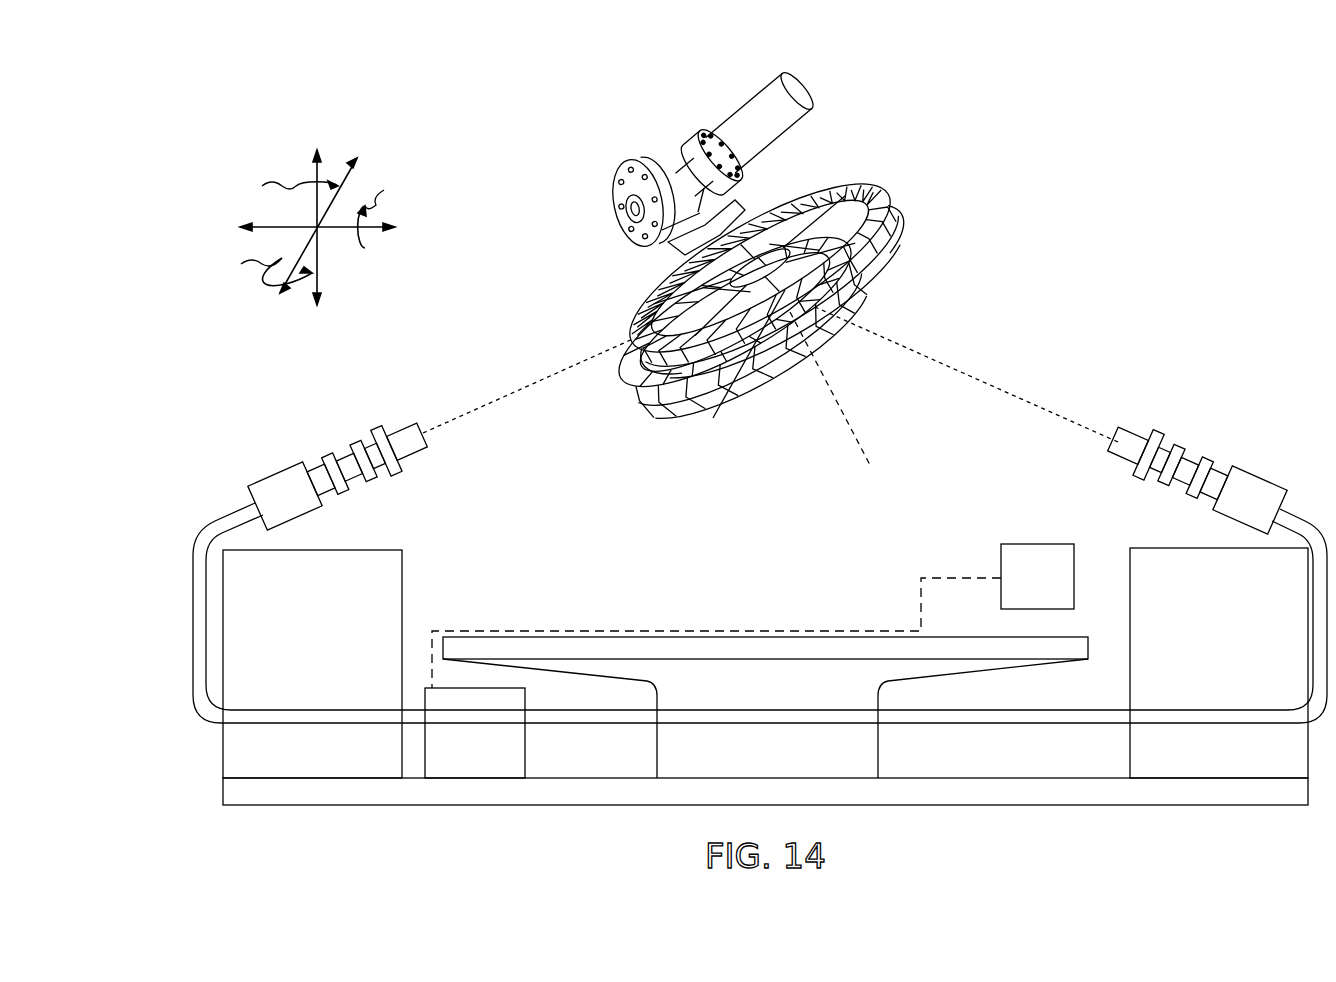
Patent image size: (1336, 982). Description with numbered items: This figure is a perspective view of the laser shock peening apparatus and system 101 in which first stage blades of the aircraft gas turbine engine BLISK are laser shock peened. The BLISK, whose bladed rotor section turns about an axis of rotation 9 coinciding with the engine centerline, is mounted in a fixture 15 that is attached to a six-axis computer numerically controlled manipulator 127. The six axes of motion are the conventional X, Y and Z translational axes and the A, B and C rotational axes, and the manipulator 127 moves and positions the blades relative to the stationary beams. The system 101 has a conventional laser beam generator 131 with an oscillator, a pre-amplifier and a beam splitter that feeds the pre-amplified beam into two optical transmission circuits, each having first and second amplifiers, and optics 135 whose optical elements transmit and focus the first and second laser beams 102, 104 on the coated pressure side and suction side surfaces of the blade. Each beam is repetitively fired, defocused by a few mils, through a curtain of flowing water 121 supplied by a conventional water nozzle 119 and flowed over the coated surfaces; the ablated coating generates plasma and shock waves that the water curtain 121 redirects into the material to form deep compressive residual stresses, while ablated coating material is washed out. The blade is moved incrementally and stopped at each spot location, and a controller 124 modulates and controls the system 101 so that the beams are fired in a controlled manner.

The axis of rotation 9 is at (826, 448).
The fixture 15 is at (742, 196).
The laser shock peening apparatus and system 101 is at (511, 185).
The first laser beam 102 is at (490, 412).
The second laser beam 104 is at (1040, 400).
The water nozzle 119 is at (668, 254).
The curtain of flowing water 121 is at (808, 320).
The controller 124 is at (1057, 589).
The six-axis computer numerically controlled (CNC) manipulator 127 is at (652, 138).
The laser beam generator 131 is at (495, 740).
The optics 135 is at (330, 450).